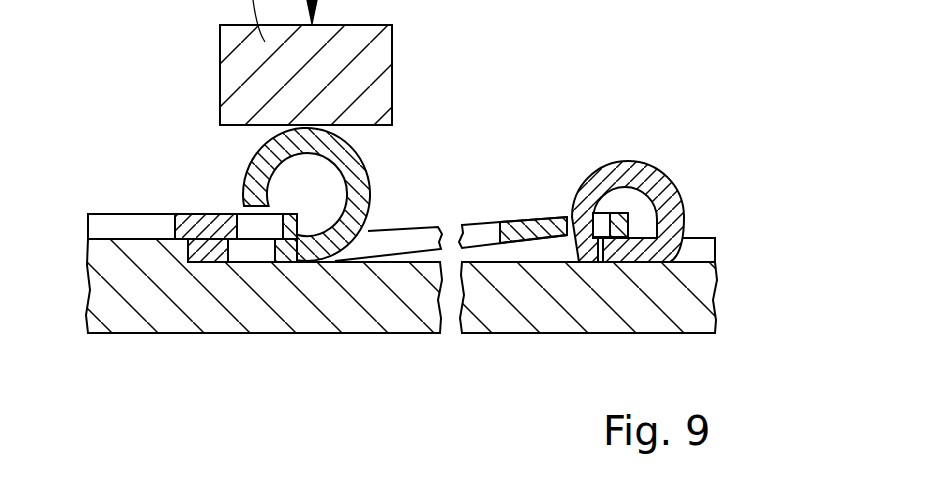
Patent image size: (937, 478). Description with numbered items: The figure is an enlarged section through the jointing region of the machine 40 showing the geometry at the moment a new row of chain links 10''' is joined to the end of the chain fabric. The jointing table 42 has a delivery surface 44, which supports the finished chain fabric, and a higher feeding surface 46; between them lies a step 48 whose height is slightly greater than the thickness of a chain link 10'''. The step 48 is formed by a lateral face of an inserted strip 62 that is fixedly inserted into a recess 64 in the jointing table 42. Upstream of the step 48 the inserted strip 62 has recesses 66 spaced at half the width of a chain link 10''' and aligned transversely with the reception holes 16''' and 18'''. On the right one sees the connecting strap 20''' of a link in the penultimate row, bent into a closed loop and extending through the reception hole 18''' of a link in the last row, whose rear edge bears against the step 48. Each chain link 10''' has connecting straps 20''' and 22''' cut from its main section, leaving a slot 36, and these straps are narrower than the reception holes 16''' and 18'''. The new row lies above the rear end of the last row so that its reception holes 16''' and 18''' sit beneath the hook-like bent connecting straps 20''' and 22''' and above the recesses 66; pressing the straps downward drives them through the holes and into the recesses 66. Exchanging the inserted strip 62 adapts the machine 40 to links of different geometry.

The chain link 10''' is at (351, 150).
The reception hole 16''' is at (207, 184).
The reception hole 18''' is at (562, 176).
The connecting strap 20''' is at (651, 183).
The connecting strap 22''' is at (361, 194).
The slot 36 is at (170, 230).
The machine 40 is at (494, 82).
The jointing table 42 is at (652, 313).
The delivery surface 44 is at (552, 256).
The feeding surface 46 is at (125, 243).
The step 48 is at (296, 262).
The inserted strip 62 is at (250, 258).
The recess 64 is at (212, 254).
The recess 66 is at (283, 258).